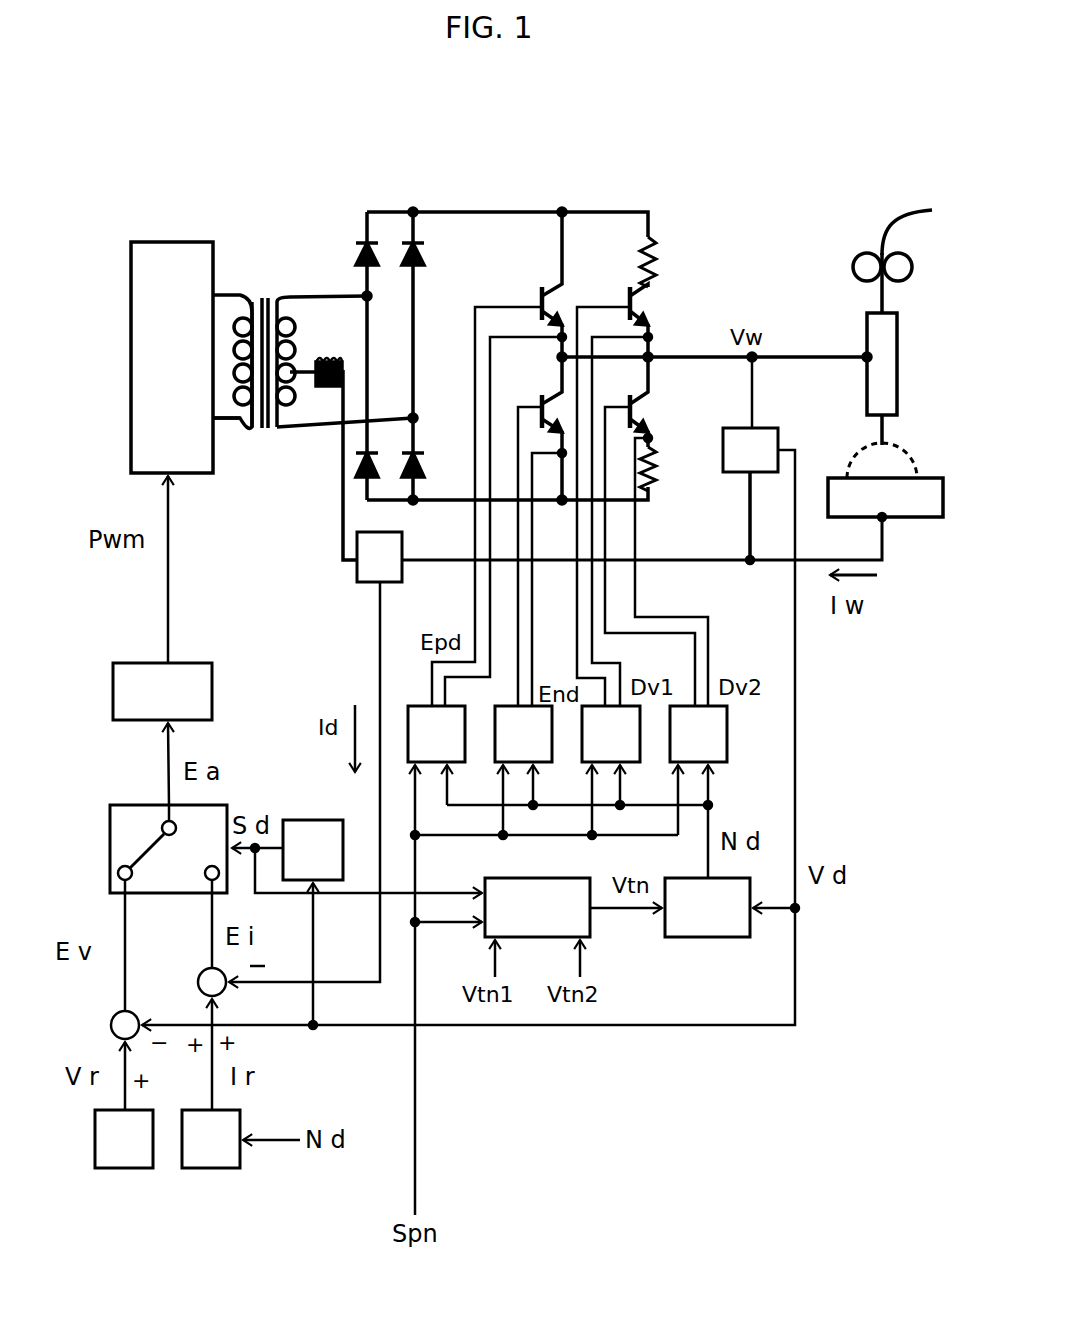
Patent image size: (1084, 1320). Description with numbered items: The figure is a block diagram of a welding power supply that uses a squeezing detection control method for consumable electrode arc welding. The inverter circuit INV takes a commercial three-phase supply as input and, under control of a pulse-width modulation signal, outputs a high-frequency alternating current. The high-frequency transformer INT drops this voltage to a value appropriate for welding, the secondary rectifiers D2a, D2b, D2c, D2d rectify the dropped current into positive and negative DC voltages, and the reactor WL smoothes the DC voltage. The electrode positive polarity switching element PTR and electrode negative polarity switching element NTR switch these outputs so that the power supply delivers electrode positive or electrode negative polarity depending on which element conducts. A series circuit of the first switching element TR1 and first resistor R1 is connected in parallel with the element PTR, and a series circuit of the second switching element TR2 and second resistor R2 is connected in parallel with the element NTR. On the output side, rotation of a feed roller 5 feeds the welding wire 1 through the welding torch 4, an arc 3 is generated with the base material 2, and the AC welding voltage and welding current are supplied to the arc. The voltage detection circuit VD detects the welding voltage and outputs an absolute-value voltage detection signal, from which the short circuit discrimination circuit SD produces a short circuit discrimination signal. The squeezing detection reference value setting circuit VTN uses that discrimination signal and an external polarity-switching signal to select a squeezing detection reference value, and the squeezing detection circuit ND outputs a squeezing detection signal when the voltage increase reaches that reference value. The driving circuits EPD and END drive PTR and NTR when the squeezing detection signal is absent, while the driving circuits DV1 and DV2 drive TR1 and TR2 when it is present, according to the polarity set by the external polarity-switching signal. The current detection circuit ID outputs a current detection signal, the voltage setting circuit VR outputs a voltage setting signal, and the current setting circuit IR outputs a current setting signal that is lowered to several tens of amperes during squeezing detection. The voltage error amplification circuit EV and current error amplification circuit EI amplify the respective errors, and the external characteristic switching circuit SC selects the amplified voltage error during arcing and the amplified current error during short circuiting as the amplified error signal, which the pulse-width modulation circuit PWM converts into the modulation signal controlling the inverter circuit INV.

The welding wire 1 is at (887, 428).
The base material 2 is at (927, 517).
The arc 3 is at (852, 463).
The welding torch 4 is at (867, 327).
The feed roller 5 is at (852, 268).
The inverter circuit INV is at (172, 357).
The high-frequency transformer INT is at (257, 292).
The reactor WL is at (345, 344).
The secondary rectifier D2a is at (356, 256).
The secondary rectifier D2b is at (403, 255).
The secondary rectifier D2c is at (407, 470).
The secondary rectifier D2d is at (355, 468).
The electrode positive polarity switching element PTR is at (526, 284).
The electrode negative polarity switching element NTR is at (530, 428).
The first switching element TR1 is at (676, 320).
The second switching element TR2 is at (675, 402).
The first resistor R1 is at (679, 259).
The second resistor R2 is at (676, 469).
The voltage detection circuit VD is at (750, 450).
The current detection circuit ID is at (379, 557).
The electrode positive polarity switching element driving circuit EPD is at (436, 734).
The electrode negative polarity switching element driving circuit END is at (523, 734).
The first switching element driving circuit DV1 is at (611, 734).
The second switching element driving circuit DV2 is at (698, 734).
The squeezing detection reference value setting circuit VTN is at (537, 907).
The squeezing detection circuit ND is at (707, 907).
The short circuit discrimination circuit SD is at (313, 850).
The external characteristic switching circuit SC is at (141, 849).
The pulse-width modulation circuit PWM is at (162, 691).
The voltage error amplification circuit EV is at (94, 1026).
The current error amplification circuit EI is at (185, 983).
The voltage setting circuit VR is at (124, 1139).
The current setting circuit IR is at (211, 1139).